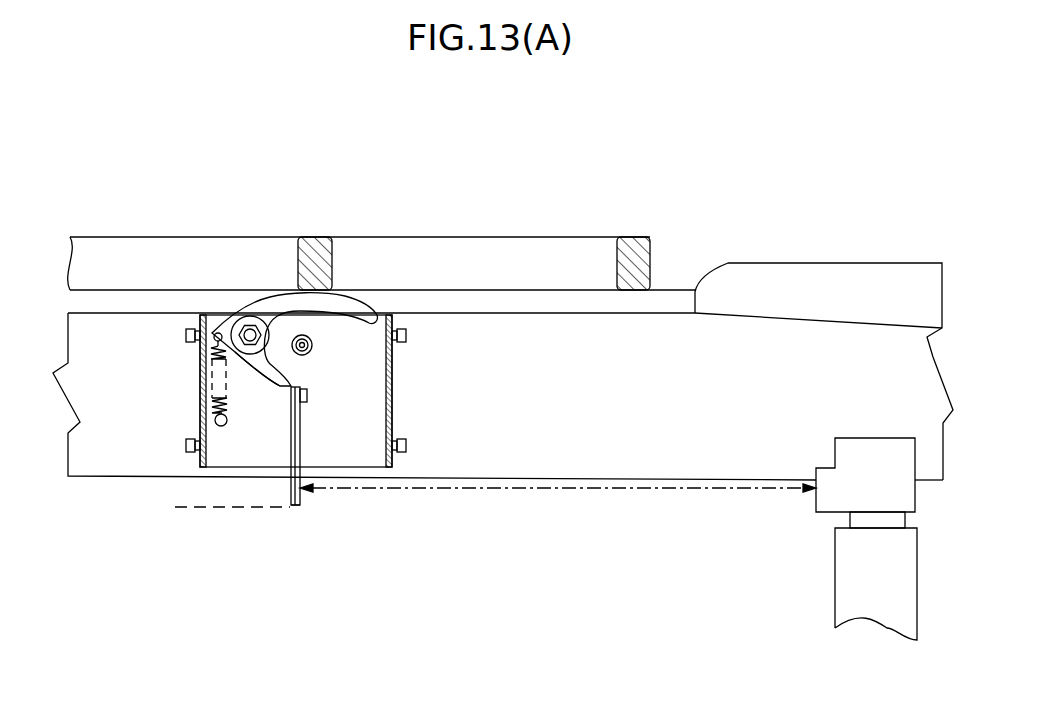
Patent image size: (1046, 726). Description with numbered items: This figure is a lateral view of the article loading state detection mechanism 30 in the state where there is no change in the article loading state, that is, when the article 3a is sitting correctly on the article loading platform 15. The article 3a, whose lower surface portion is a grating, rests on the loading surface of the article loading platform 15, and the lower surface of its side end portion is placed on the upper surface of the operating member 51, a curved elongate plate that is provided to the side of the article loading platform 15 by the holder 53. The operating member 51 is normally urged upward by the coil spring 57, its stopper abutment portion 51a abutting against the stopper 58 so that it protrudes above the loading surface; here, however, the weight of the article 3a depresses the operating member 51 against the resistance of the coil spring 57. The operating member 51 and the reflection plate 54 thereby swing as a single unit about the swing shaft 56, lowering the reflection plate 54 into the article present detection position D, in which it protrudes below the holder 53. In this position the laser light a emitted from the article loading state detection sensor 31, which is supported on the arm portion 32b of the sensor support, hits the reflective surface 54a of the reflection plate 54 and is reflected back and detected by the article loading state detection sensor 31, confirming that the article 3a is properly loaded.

The article 3a is at (534, 237).
The article loading platform 15 is at (100, 455).
The article loading state detection mechanism 30 is at (756, 211).
The article loading state detection sensor 31 is at (855, 445).
The arm portion 32b is at (855, 575).
The operating member 51 is at (348, 305).
The stopper abutment portion 51a is at (281, 381).
The holder 53 is at (392, 385).
The reflection plate 54 is at (293, 508).
The reflective surface 54a is at (301, 498).
The swing shaft 56 is at (241, 324).
The coil spring 57 is at (215, 404).
The stopper 58 is at (313, 348).
The article present detection position D is at (221, 511).
The laser light a is at (500, 488).